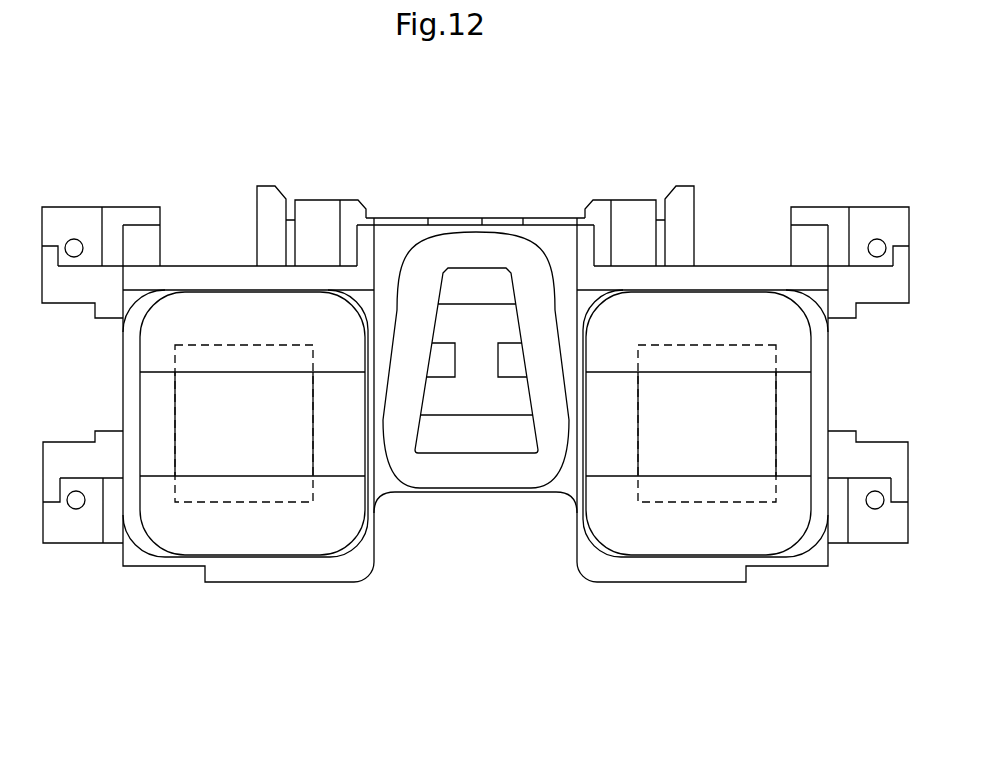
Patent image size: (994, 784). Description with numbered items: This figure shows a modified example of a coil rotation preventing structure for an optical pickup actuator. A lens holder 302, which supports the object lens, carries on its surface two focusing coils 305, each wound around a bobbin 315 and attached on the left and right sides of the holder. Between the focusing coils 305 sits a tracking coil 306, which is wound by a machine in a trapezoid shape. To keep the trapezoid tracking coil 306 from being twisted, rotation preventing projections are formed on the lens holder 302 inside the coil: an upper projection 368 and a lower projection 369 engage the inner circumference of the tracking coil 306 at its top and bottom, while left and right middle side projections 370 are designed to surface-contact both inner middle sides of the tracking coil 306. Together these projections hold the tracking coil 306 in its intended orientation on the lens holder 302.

The lens holder 302 is at (318, 220).
The focusing coil 305 is at (153, 394).
The tracking coil 306 is at (518, 250).
The bobbin 315 is at (157, 338).
The upper projection 368 is at (482, 292).
The lower projection 369 is at (460, 442).
The middle side projection 370 is at (447, 362).